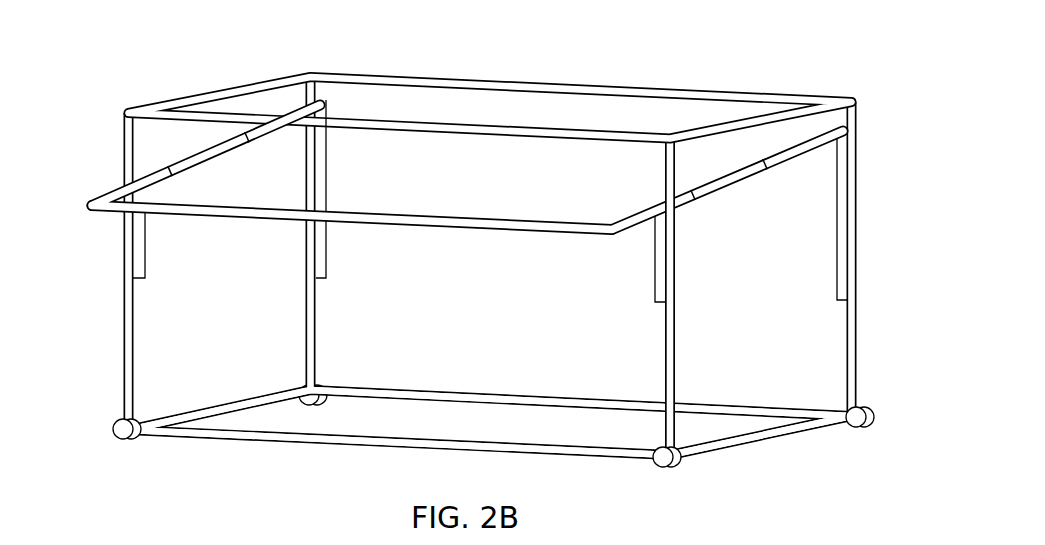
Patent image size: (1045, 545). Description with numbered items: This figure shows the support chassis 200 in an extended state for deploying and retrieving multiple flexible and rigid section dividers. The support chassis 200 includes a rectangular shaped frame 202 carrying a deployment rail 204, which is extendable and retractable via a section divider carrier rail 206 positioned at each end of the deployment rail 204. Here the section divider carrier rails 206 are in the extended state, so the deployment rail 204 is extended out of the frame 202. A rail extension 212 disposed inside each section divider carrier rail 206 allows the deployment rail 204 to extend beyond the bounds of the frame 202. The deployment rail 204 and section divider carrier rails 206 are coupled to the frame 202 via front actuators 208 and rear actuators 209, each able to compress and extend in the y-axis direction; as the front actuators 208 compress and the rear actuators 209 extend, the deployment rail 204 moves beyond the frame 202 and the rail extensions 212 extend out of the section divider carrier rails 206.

The support chassis 200 is at (479, 257).
The frame 202 is at (563, 83).
The deployment rail 204 is at (510, 164).
The section divider carrier rail 206 is at (297, 108).
The front actuator 208 is at (148, 243).
The rear actuator 209 is at (327, 187).
The rail extension 212 is at (213, 158).